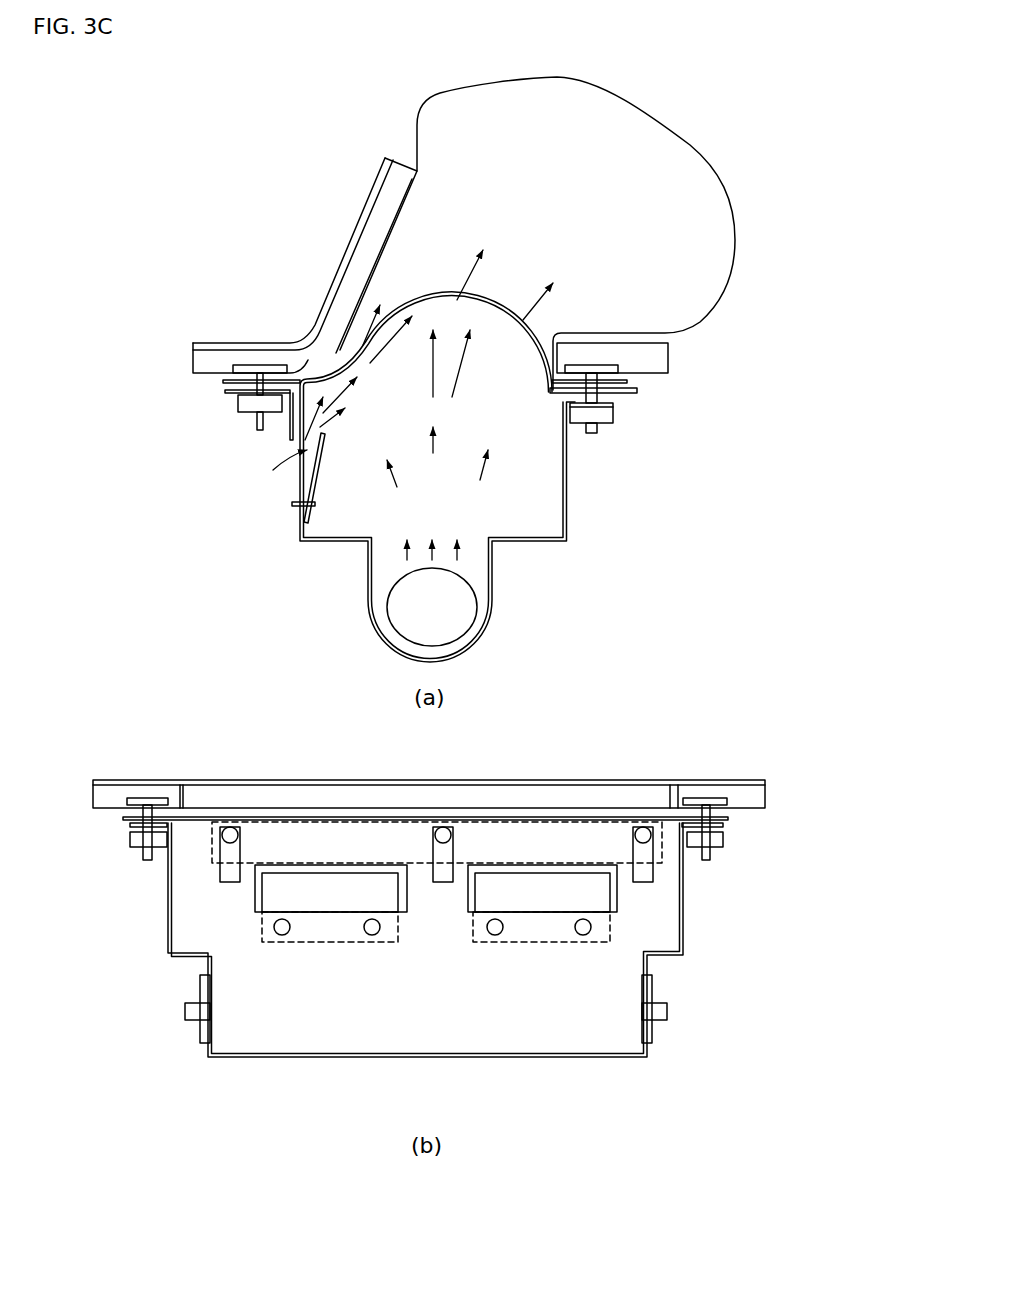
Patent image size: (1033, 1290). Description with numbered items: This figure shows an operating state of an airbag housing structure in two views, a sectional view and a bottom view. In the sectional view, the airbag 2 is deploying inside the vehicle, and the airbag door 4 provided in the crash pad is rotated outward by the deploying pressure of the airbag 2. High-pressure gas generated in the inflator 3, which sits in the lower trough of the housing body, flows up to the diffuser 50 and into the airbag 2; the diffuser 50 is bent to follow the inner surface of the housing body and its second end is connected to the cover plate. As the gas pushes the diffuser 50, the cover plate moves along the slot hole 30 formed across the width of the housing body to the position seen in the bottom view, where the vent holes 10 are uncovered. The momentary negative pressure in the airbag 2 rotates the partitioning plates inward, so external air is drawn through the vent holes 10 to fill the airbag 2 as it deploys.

The airbag 2 is at (687, 162).
The inflator 3 is at (457, 623).
The airbag door 4 is at (352, 242).
The vent hole 10 is at (327, 872).
The slot hole 30 is at (227, 850).
The diffuser 50 is at (372, 327).